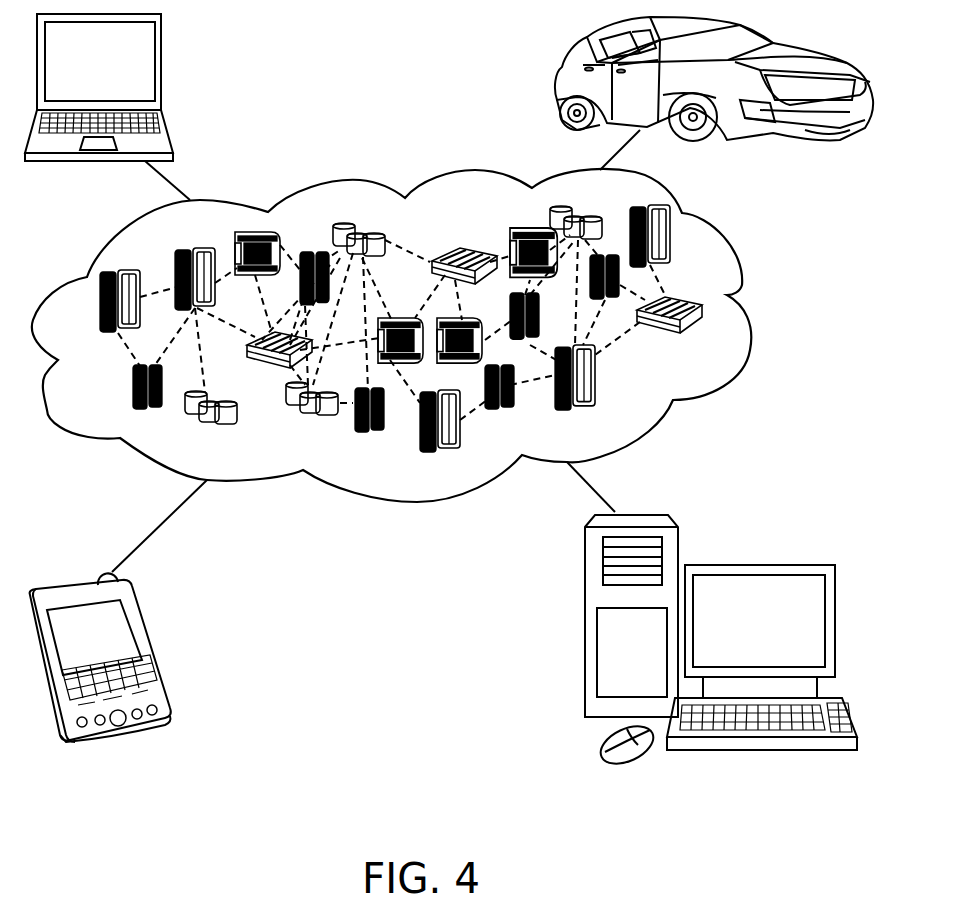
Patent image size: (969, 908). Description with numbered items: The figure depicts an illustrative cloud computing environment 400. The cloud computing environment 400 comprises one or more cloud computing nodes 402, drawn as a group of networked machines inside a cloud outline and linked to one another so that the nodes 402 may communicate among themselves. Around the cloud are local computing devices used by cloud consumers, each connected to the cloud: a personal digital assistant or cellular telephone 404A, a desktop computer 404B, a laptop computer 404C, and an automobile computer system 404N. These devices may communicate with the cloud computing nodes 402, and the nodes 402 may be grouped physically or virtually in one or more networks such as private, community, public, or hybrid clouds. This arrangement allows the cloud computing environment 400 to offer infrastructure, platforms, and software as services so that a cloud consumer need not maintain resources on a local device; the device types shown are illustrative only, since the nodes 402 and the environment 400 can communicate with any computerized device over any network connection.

The cloud computing environment 400 is at (712, 307).
The cloud computing nodes 402 is at (703, 335).
The personal digital assistant (PDA) or cellular telephone 404A is at (148, 616).
The desktop computer 404B is at (746, 565).
The laptop computer 404C is at (161, 45).
The automobile computer system 404N is at (560, 84).